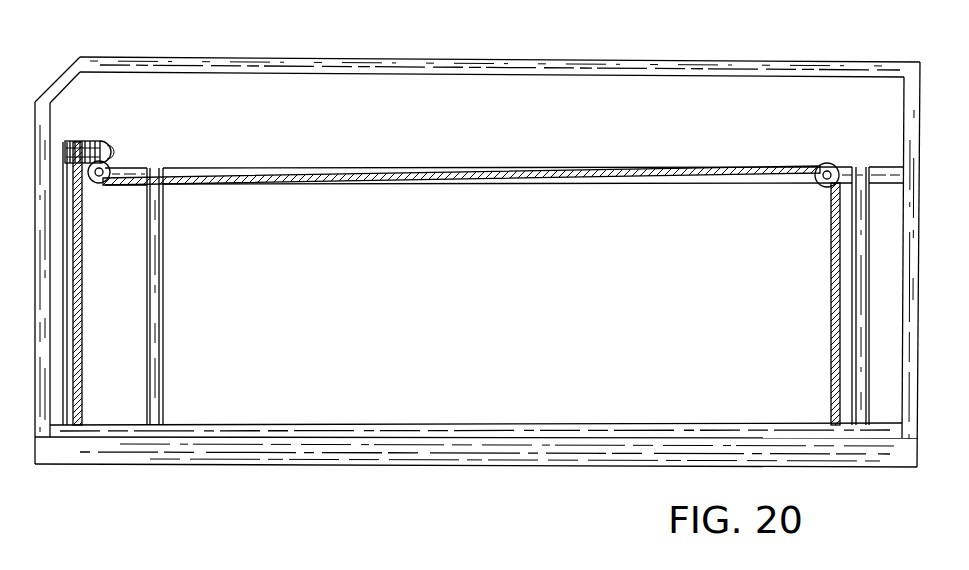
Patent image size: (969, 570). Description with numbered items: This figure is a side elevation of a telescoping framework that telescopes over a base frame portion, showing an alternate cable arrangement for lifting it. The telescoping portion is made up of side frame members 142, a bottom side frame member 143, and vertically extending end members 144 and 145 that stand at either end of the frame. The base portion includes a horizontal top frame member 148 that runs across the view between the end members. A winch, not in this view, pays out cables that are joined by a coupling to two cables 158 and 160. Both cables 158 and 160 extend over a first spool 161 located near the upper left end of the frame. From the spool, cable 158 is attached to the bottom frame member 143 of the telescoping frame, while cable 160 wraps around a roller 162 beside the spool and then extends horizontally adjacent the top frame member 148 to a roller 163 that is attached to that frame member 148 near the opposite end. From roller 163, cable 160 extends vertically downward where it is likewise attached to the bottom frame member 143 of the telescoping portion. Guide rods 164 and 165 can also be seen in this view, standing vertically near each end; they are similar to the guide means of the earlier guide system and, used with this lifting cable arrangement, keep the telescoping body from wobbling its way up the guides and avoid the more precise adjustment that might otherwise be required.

The side frame members 142 is at (458, 67).
The bottom side frame member 143 is at (478, 430).
The vertically extending end member 144 is at (43, 373).
The vertically extending end member 145 is at (915, 340).
The horizontal top frame member 148 is at (213, 174).
The cable 158 is at (92, 213).
The cable 160 is at (312, 182).
The first spool 161 is at (92, 113).
The roller 162 is at (133, 148).
The roller 163 is at (840, 163).
The guide rod 164 is at (155, 363).
The guide rod 165 is at (865, 228).